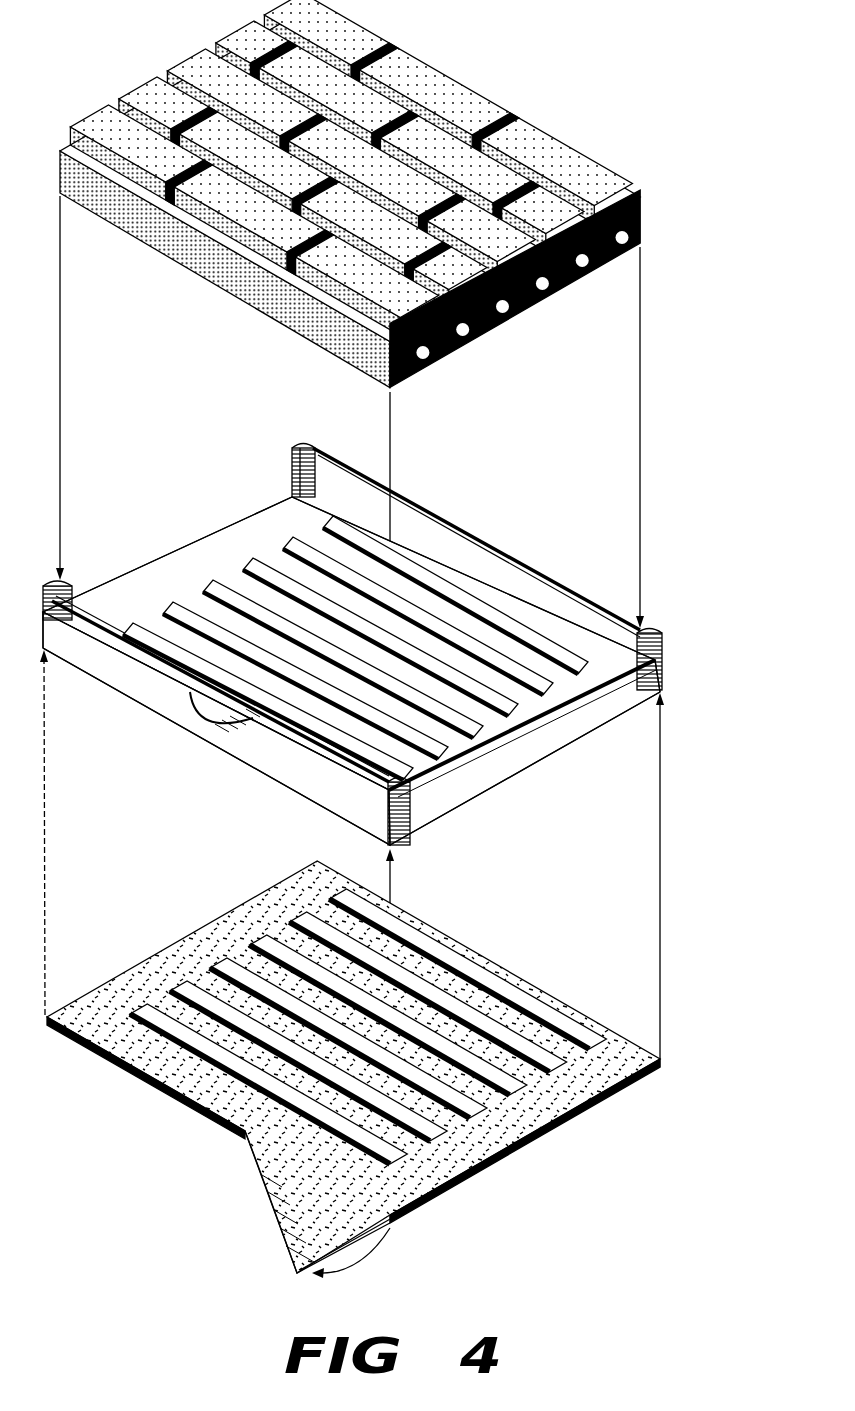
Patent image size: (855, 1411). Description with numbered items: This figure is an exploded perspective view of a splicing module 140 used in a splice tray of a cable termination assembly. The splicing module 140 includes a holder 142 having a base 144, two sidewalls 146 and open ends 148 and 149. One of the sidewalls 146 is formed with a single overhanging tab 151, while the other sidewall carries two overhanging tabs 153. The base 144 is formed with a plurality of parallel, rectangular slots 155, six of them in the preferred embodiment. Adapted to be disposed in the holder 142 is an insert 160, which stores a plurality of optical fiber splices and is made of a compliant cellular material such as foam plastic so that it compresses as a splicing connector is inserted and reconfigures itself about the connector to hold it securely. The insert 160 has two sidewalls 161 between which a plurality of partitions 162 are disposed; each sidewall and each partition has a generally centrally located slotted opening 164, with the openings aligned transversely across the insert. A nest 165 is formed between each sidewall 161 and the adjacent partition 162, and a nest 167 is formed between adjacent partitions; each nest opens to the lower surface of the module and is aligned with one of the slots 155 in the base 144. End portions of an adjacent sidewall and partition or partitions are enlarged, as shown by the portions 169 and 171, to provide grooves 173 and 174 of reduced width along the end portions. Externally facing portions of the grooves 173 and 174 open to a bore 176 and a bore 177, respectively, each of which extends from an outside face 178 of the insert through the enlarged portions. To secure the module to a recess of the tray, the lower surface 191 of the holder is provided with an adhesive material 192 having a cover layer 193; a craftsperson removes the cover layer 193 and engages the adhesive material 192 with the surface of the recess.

The splicing module 140 is at (658, 61).
The insert 160 is at (358, 206).
The sidewalls 161 is at (325, 327).
The partitions 162 is at (318, 199).
The slotted opening 164 is at (442, 100).
The nest 165 is at (387, 144).
The nest 167 is at (360, 86).
The enlarged portion 169 is at (622, 210).
The enlarged portion 171 is at (585, 200).
The groove 173 is at (104, 138).
The groove 174 is at (160, 110).
The bore 176 is at (623, 245).
The bore 177 is at (537, 300).
The outside face 178 is at (458, 355).
The holder 142 is at (372, 621).
The base 144 is at (558, 727).
The sidewalls 146 is at (452, 545).
The open end 148 is at (166, 563).
The open end 149 is at (501, 777).
The overhanging tab 151 is at (198, 686).
The overhanging tabs 153 is at (296, 452).
The slots 155 is at (488, 600).
The lower surface 191 is at (254, 770).
The adhesive material 192 is at (353, 1069).
The cover layer 193 is at (297, 1228).